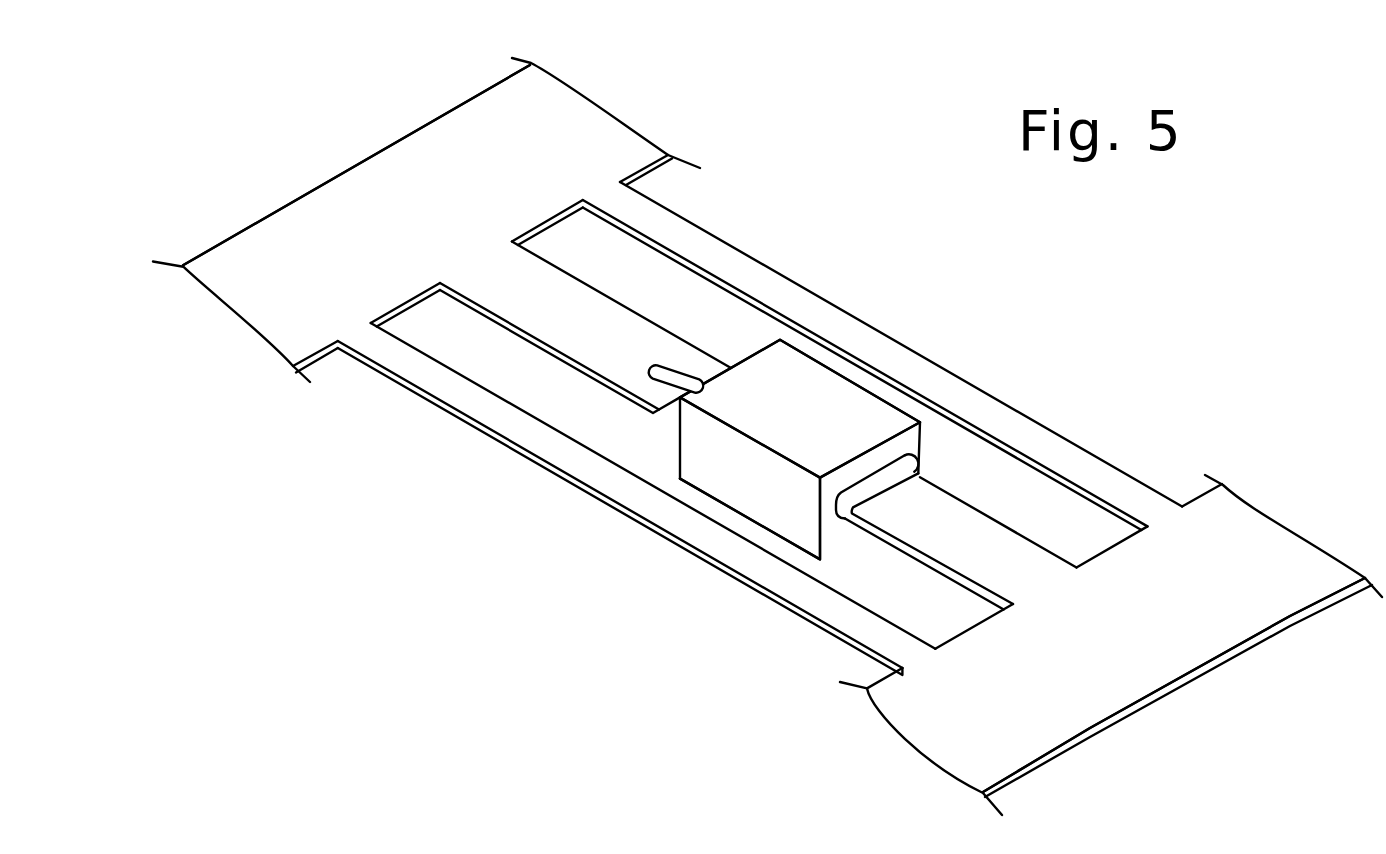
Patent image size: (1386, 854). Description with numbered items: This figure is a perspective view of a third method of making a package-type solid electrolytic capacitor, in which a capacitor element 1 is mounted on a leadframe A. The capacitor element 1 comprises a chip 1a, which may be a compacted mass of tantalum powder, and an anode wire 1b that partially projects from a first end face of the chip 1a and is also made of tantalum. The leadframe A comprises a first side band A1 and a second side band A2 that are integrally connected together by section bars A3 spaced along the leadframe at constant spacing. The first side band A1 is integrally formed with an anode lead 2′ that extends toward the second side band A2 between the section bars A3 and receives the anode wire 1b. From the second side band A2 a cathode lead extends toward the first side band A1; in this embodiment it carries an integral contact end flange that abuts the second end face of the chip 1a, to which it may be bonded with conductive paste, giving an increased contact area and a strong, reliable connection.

The leadframe A is at (443, 102).
The first side band A1 is at (310, 257).
The second side band A2 is at (1120, 672).
The section bars A3 is at (1097, 478).
The capacitor element 1 is at (822, 347).
The chip 1a is at (820, 413).
The anode wire 1b is at (677, 367).
The anode lead 2′ is at (553, 320).